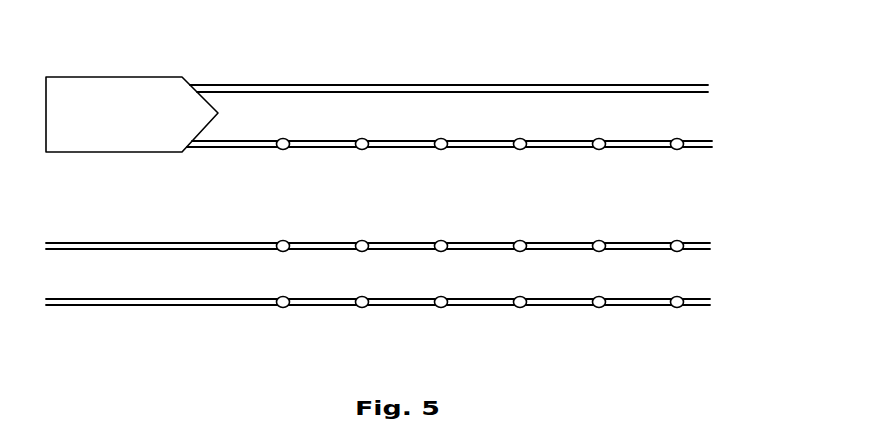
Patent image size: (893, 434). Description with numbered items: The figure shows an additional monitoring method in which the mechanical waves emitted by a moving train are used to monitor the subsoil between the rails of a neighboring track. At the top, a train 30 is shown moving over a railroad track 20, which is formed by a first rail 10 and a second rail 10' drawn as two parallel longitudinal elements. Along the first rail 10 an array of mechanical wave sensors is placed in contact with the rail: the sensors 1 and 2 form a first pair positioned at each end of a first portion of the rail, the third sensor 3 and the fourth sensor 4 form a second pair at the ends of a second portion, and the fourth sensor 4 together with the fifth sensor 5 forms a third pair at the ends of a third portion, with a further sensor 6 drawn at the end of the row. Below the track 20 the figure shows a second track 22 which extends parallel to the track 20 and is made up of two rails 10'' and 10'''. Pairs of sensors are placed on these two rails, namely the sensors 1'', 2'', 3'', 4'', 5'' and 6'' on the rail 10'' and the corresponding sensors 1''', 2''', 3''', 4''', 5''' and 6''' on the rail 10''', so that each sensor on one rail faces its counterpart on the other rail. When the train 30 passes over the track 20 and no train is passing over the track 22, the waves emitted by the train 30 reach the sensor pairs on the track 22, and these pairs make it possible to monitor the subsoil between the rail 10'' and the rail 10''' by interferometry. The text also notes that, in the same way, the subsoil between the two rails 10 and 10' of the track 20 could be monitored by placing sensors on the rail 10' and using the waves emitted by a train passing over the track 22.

The train 30 is at (93, 152).
The railroad track 20 is at (470, 102).
The track 22 is at (403, 276).
The first rail 10 is at (470, 166).
The second rail 10' is at (471, 71).
The rail 10'' is at (395, 241).
The rail 10''' is at (397, 325).
The sensor 1 is at (273, 167).
The sensor 2 is at (355, 165).
The third sensor 3 is at (437, 164).
The fourth sensor 4 is at (514, 164).
The fifth sensor 5 is at (600, 164).
The sensor 6 is at (674, 164).
The sensor 1'' is at (263, 261).
The sensor 2'' is at (344, 261).
The sensor 3'' is at (423, 262).
The sensor 4'' is at (499, 262).
The sensor 5'' is at (583, 262).
The sensor 6'' is at (663, 258).
The sensor 1''' is at (262, 316).
The sensor 2''' is at (343, 316).
The sensor 3''' is at (436, 322).
The sensor 4''' is at (510, 322).
The sensor 5''' is at (592, 320).
The sensor 6''' is at (664, 325).